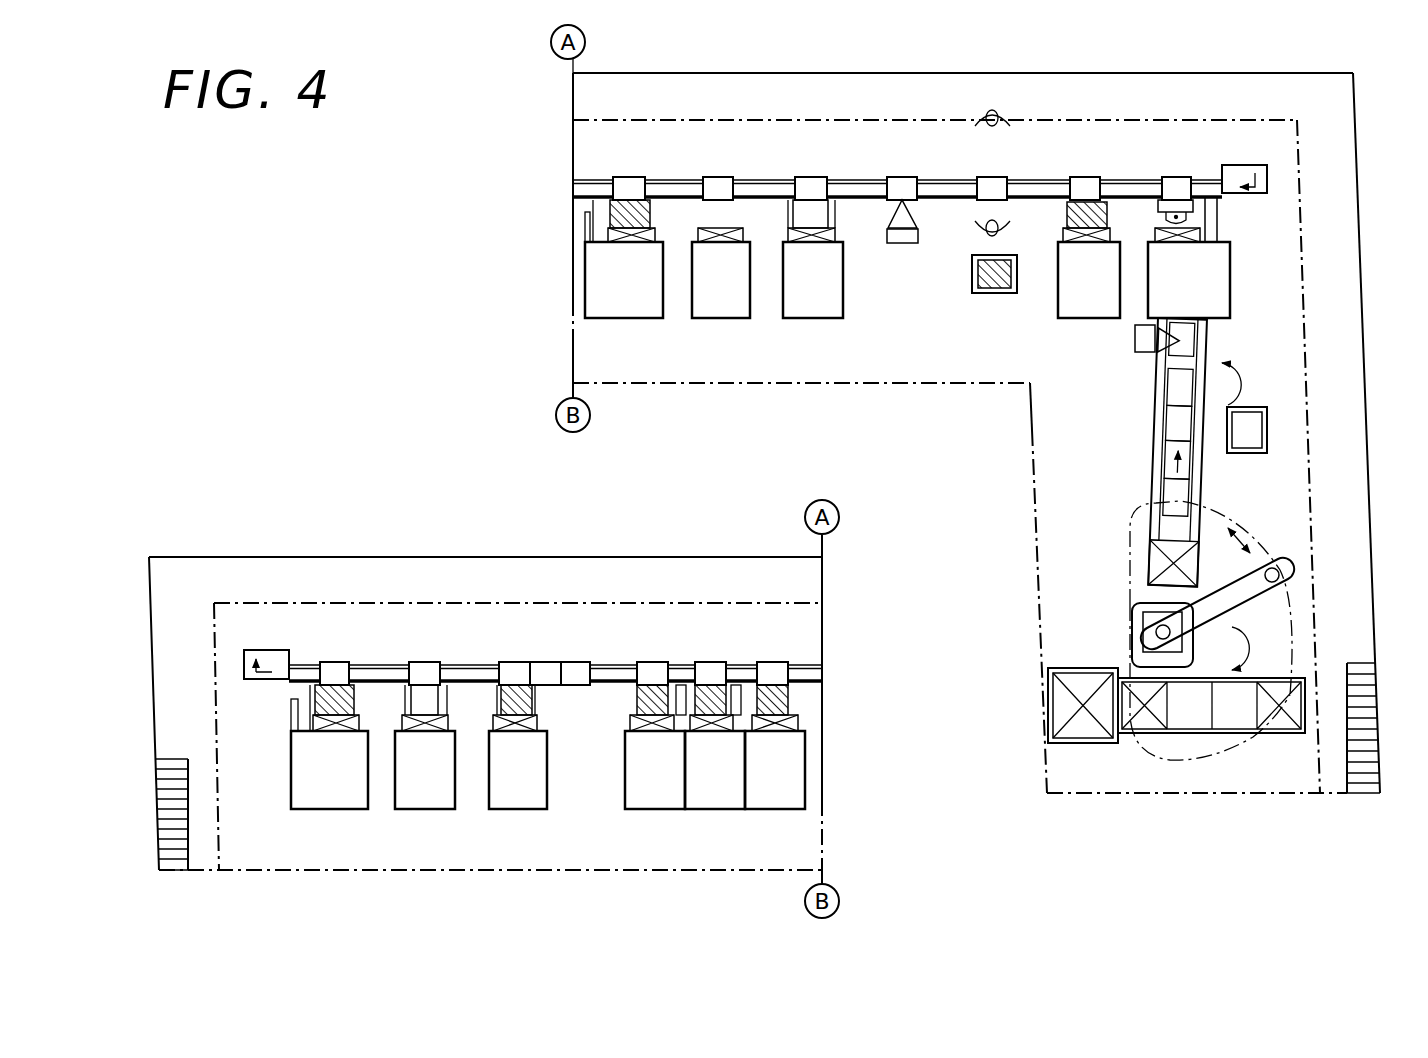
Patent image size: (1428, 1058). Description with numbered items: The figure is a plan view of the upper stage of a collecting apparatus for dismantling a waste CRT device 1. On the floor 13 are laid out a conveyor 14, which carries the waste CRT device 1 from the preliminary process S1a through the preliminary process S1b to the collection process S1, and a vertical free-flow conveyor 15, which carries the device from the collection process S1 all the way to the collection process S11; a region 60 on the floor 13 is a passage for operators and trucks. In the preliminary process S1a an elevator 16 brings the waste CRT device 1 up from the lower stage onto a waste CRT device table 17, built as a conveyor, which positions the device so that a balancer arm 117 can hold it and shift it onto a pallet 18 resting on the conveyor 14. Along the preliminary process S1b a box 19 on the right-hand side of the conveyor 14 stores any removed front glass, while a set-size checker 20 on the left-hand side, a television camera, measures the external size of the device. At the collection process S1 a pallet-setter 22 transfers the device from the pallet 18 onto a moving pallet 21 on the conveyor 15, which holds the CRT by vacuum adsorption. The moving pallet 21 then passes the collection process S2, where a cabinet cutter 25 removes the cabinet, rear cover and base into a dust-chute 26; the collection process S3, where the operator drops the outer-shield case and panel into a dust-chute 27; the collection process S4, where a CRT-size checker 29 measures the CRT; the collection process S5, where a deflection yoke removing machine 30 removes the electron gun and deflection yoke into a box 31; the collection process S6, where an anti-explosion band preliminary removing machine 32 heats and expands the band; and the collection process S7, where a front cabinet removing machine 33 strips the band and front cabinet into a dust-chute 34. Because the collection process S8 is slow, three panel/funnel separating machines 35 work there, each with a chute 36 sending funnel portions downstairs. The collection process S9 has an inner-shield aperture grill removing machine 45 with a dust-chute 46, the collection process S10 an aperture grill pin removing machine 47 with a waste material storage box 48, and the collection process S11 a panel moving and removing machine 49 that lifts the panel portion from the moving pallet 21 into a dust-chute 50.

The waste CRT device 1 is at (1220, 203).
The floor 13 is at (1083, 787).
The conveyor 14 is at (1186, 451).
The vertical free-flow conveyor 15 is at (1056, 172).
The elevator 16 is at (1065, 712).
The waste CRT device table 17 is at (1185, 717).
The pallet 18 is at (1181, 418).
The box 19 is at (1256, 421).
The set-size checker 20 is at (1138, 343).
The moving pallet 21 is at (1172, 172).
The pallet-setter 22 is at (1175, 301).
The cabinet cutter 25 is at (1075, 301).
The dust-chute 26 is at (1108, 215).
The dust-chute 27 is at (995, 295).
The CRT-size checker 29 is at (905, 248).
The deflection yoke removing machine 30 is at (799, 301).
The box 31 is at (828, 213).
The anti-explosion band preliminary removing machine 32 is at (707, 301).
The front cabinet removing machine 33 is at (610, 301).
The dust-chute 34 is at (652, 215).
The panel/funnel separating machine 35 is at (641, 786).
The chute 36 is at (795, 703).
The inner-shield aperture grill removing machine 45 is at (504, 786).
The dust-chute 46 is at (537, 703).
The aperture grill pin removing machine 47 is at (411, 786).
The waste material storage box 48 is at (447, 703).
The panel moving and removing machine 49 is at (315, 786).
The dust-chute 50 is at (354, 703).
The region 60 is at (813, 92).
The balancer arm 117 is at (1243, 595).
The collection process S1 is at (1179, 172).
The preliminary process S1a is at (1253, 747).
The preliminary process S1b is at (1150, 432).
The collection process S2 is at (1087, 172).
The collection process S3 is at (994, 172).
The collection process S4 is at (904, 172).
The collection process S5 is at (813, 172).
The collection process S6 is at (720, 172).
The collection process S7 is at (630, 172).
The collection process S8 is at (788, 651).
The collection process S9 is at (515, 657).
The collection process S10 is at (425, 657).
The collection process S11 is at (335, 657).